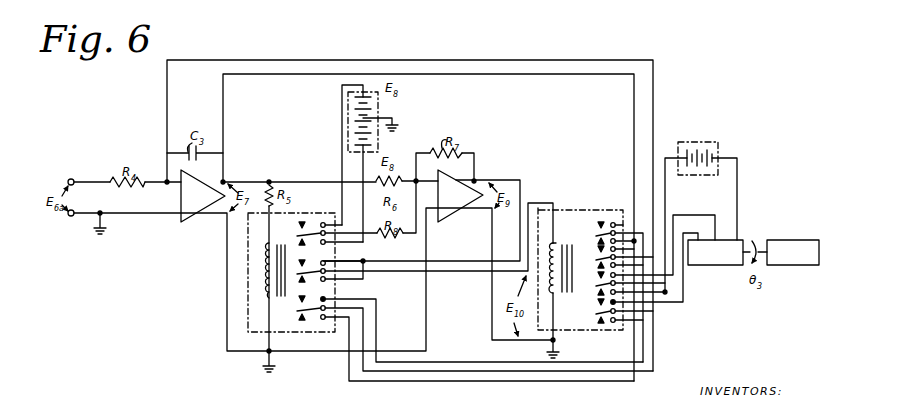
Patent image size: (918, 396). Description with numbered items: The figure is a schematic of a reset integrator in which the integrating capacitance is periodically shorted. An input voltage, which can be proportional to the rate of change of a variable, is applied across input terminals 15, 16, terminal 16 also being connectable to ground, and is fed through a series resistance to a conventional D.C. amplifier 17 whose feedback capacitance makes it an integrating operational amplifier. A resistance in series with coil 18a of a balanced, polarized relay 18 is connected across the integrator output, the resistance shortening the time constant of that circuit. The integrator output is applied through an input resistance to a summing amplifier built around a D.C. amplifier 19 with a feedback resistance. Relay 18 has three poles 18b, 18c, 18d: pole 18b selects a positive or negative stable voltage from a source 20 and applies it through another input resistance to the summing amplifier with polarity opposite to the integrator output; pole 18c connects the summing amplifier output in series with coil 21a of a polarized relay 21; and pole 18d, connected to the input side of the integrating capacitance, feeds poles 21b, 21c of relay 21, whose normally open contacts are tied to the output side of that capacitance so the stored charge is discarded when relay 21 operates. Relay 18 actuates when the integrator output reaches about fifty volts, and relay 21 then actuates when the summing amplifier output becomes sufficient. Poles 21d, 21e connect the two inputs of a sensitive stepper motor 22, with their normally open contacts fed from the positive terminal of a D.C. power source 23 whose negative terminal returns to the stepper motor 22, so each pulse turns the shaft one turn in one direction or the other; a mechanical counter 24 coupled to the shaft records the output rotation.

The input terminal 15 is at (74, 180).
The input terminal 16 is at (70, 216).
The D.C. amplifier 17 is at (203, 196).
The polarized relay 18 is at (291, 272).
The relay coil 18a is at (262, 268).
The relay pole 18b is at (306, 229).
The relay pole 18c is at (303, 274).
The relay pole 18d is at (315, 312).
The D.C. amplifier 19 is at (460, 196).
The voltage source 20 is at (380, 113).
The polarized relay 21 is at (580, 283).
The relay coil 21a is at (549, 241).
The relay pole 21b is at (599, 232).
The relay pole 21c is at (598, 256).
The relay pole 21d is at (601, 287).
The relay pole 21e is at (603, 314).
The stepper motor 22 is at (715, 252).
The D.C. power source 23 is at (694, 140).
The mechanical counter 24 is at (793, 252).